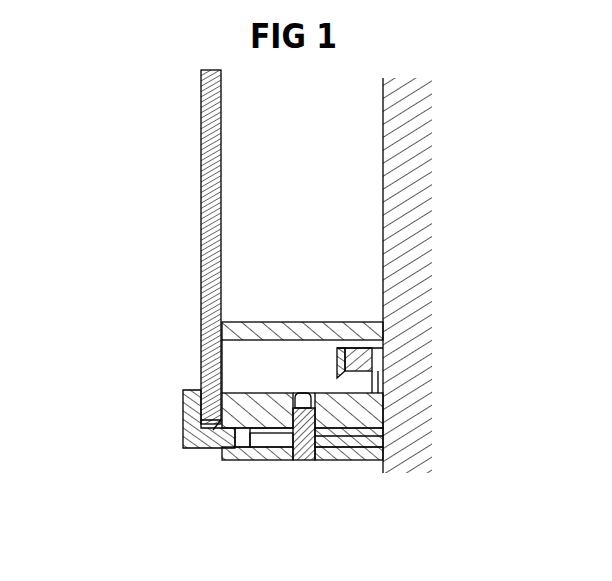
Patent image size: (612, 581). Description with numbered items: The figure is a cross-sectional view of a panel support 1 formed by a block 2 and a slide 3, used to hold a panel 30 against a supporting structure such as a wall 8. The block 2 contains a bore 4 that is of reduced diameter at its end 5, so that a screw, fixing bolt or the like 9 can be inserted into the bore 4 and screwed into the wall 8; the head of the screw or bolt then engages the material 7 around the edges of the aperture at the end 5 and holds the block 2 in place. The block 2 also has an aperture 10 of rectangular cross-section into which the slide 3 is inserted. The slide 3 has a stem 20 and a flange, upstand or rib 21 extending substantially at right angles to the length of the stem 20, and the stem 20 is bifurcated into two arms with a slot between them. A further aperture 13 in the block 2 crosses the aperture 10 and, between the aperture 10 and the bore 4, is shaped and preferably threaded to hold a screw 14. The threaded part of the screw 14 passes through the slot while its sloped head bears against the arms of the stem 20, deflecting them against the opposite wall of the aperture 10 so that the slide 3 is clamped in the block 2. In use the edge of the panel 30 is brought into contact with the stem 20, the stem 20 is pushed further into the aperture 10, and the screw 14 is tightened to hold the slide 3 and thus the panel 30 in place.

The panel 30 is at (207, 182).
The wall 8 is at (402, 205).
The panel support 1 is at (318, 323).
The bore 4 is at (298, 358).
The screw, fixing bolt or the like 9 is at (347, 352).
The end of bore 5 is at (357, 362).
The material around edges of aperture 7 is at (375, 386).
The block 2 is at (365, 417).
The flange, upstand or rib 21 is at (183, 402).
The stem 20 is at (268, 440).
The slide 3 is at (215, 448).
The screw 14 is at (283, 458).
The further aperture 13 is at (318, 410).
The aperture 10 is at (360, 438).